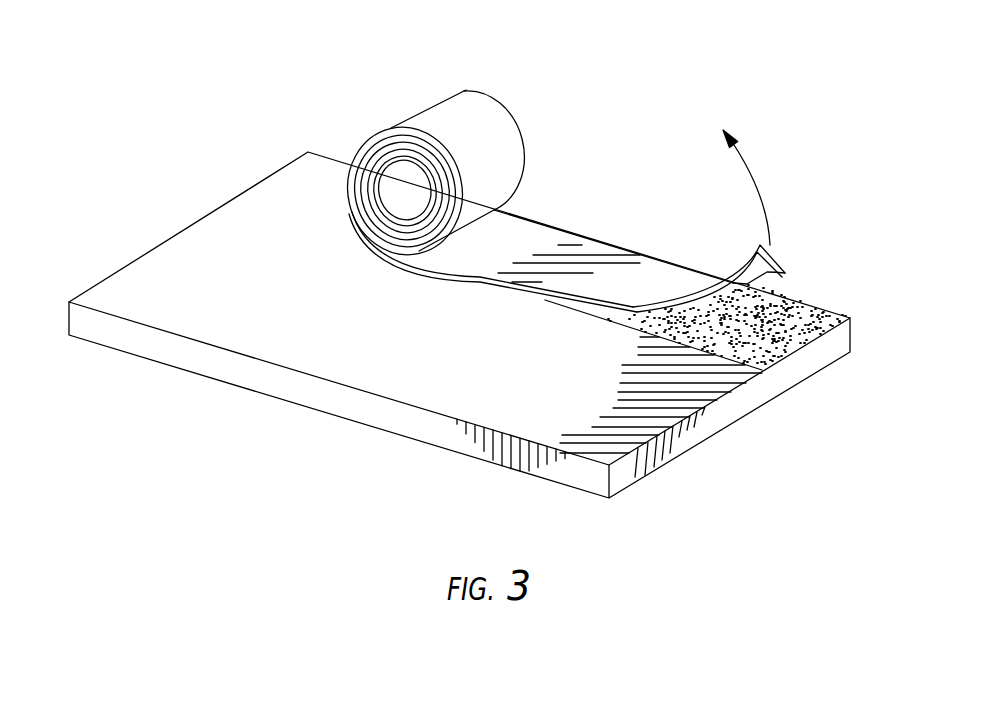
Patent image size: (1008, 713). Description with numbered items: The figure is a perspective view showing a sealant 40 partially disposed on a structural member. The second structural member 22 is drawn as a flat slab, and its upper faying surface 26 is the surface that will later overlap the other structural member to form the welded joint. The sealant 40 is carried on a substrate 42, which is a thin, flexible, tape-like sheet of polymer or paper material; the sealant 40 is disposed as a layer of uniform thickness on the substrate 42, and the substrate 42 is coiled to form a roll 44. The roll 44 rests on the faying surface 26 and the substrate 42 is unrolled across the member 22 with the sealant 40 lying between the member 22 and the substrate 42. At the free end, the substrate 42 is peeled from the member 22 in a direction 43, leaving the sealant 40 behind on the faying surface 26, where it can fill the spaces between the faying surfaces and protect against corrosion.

The second structural member 22 is at (138, 272).
The faying surface 26 is at (320, 185).
The sealant 40 is at (777, 342).
The substrate 42 is at (787, 283).
The direction 43 is at (758, 172).
The roll 44 is at (497, 102).